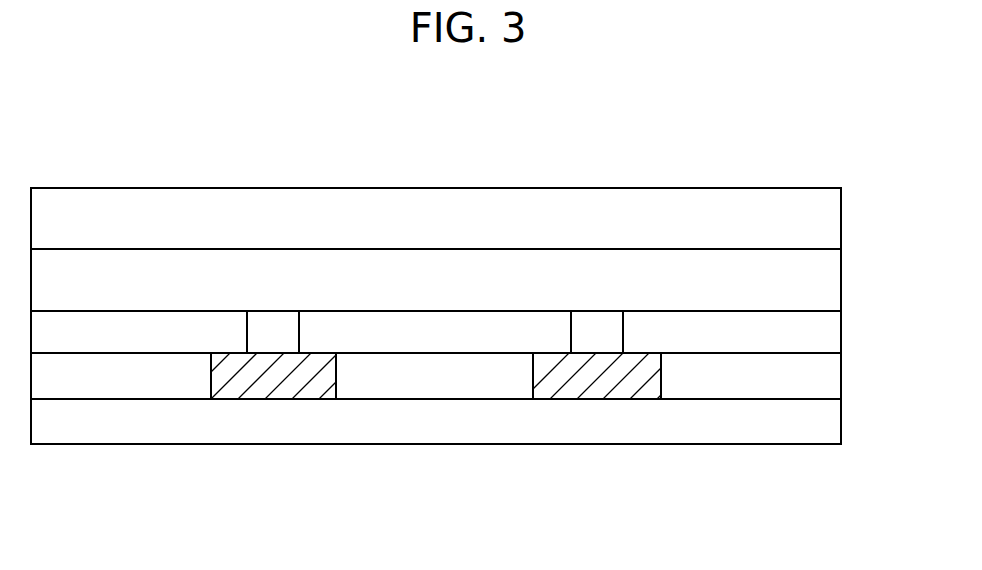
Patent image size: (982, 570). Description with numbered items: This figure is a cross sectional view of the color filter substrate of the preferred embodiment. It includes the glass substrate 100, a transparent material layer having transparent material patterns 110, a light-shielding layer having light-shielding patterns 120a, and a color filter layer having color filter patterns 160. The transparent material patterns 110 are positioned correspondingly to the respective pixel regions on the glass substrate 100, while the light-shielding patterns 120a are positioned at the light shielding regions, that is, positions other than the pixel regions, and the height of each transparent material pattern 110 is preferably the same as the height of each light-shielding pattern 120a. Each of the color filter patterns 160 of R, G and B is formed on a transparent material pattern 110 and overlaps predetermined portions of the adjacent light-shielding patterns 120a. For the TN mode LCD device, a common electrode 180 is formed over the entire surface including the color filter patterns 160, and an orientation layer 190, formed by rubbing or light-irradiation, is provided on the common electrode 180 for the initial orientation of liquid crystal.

The glass substrate 100 is at (830, 427).
The transparent material pattern 110 is at (125, 385).
The light-shielding pattern 120a is at (268, 385).
The color filter pattern 160 is at (167, 318).
The common electrode 180 is at (830, 285).
The orientation layer 190 is at (830, 226).